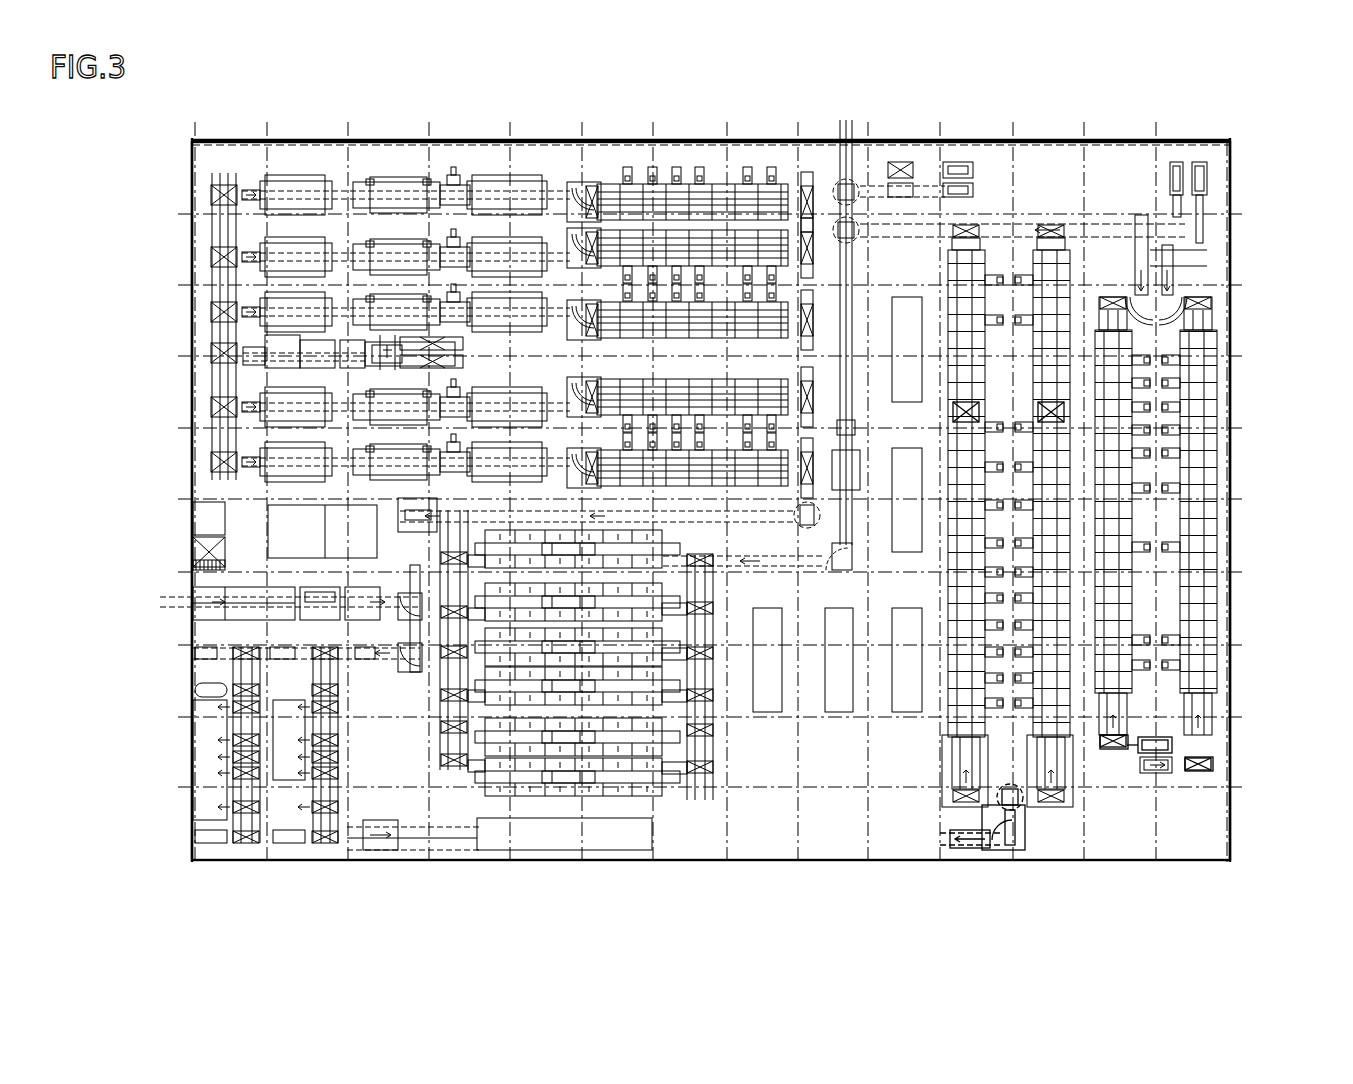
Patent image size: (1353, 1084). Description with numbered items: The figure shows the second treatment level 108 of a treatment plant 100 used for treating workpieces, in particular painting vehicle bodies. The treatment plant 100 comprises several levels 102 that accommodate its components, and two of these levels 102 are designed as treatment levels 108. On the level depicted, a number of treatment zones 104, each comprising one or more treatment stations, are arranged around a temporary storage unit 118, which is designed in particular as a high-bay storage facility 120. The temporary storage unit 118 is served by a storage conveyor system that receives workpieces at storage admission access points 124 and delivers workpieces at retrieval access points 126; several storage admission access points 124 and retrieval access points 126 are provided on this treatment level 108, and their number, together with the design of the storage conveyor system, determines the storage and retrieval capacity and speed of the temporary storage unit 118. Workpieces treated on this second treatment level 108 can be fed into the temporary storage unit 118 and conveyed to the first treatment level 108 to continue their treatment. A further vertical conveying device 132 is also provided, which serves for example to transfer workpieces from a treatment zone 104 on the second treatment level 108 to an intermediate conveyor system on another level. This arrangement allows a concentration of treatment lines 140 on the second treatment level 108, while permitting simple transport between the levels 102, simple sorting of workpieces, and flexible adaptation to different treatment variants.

The treatment plant 100 is at (1285, 330).
The level 102 is at (1243, 125).
The treatment zone 104 is at (598, 176).
The treatment level 108 is at (1248, 152).
The temporary storage unit 118 is at (595, 778).
The high-bay storage facility 120 is at (546, 790).
The storage admission access point 124 is at (483, 767).
The retrieval access point 126 is at (663, 767).
The further vertical conveying device 132 is at (1172, 772).
The treatment line 140 is at (276, 302).